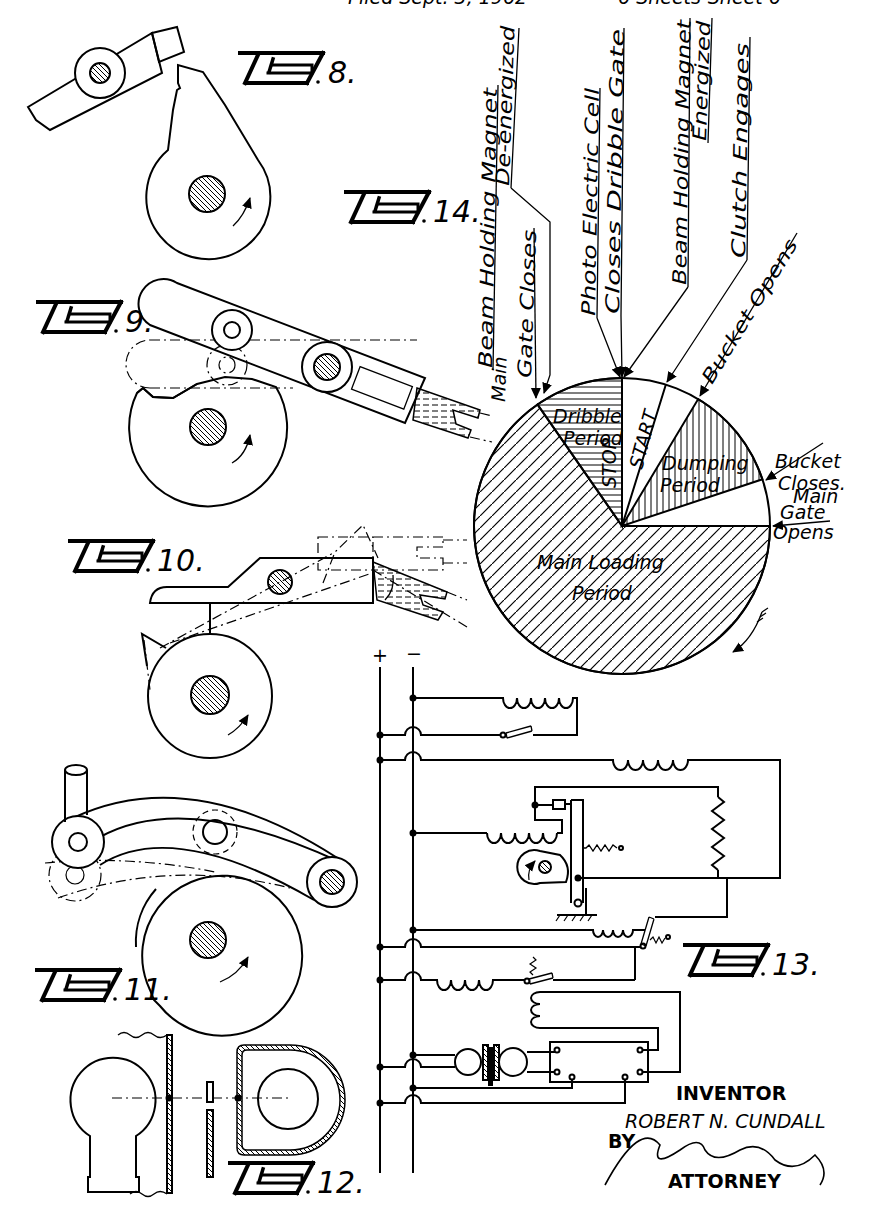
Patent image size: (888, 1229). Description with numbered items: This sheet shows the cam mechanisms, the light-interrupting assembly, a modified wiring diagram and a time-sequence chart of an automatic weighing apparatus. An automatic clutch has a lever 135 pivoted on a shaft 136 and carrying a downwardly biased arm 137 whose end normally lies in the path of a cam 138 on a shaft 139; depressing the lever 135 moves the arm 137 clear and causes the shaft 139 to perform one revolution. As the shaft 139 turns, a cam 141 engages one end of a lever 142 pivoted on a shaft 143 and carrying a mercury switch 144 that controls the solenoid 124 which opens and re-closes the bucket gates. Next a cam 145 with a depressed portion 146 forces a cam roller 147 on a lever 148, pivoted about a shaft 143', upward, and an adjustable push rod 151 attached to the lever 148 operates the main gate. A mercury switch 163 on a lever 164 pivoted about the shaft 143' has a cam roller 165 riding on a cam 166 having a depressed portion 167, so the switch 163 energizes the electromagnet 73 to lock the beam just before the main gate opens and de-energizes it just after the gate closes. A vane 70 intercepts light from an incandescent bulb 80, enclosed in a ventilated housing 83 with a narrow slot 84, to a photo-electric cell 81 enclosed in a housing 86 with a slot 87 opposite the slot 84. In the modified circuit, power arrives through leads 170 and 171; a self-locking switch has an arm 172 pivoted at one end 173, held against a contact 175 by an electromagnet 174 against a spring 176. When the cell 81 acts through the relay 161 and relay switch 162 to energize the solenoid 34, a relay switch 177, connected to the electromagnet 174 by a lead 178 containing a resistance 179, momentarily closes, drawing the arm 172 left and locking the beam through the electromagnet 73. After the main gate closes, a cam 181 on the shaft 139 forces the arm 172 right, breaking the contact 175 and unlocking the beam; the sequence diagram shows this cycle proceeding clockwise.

In FIG. 8, the lever 135 is at (67, 107).
In FIG. 8, the shaft 136 is at (104, 80).
In FIG. 8, the arm 137 is at (176, 40).
In FIG. 8, the cam 138 is at (217, 123).
In FIG. 8, the shaft 139 is at (216, 186).
In FIG. 9, the shaft 139 is at (207, 434).
In FIG. 10, the shaft 139 is at (205, 703).
In FIG. 11, the shaft 139 is at (209, 922).
In FIG. 13, the shaft 139 is at (549, 875).
In FIG. 9, the lever 164 is at (275, 332).
In FIG. 9, the cam roller 165 is at (236, 325).
In FIG. 9, the cam 166 is at (152, 462).
In FIG. 9, the depressed portion 167 is at (147, 390).
In FIG. 9, the shaft 143' is at (347, 352).
In FIG. 11, the shaft 143' is at (340, 865).
In FIG. 9, the mercury switch 163 is at (437, 392).
In FIG. 10, the cam 141 is at (170, 636).
In FIG. 10, the lever 142 is at (265, 558).
In FIG. 10, the shaft 143 is at (290, 605).
In FIG. 10, the mercury switch 144 is at (400, 598).
In FIG. 13, the mercury switch 144 is at (507, 728).
In FIG. 11, the cam 145 is at (148, 935).
In FIG. 11, the depressed portion 146 is at (143, 901).
In FIG. 11, the cam roller 147 is at (225, 817).
In FIG. 11, the lever 148 is at (270, 823).
In FIG. 11, the adjustable push rod 151 is at (80, 786).
In FIG. 12, the incandescent bulb 80 is at (86, 1074).
In FIG. 13, the incandescent bulb 80 is at (468, 1051).
In FIG. 12, the photo-electric cell 81 is at (291, 1078).
In FIG. 13, the photo-electric cell 81 is at (521, 1048).
In FIG. 12, the housing 83 is at (173, 1068).
In FIG. 13, the housing 83 is at (484, 1045).
In FIG. 12, the slot 84 is at (165, 1100).
In FIG. 12, the housing 86 is at (325, 1072).
In FIG. 12, the slot 87 is at (240, 1096).
In FIG. 13, the slot 87 is at (497, 1045).
In FIG. 12, the vane 70 is at (207, 1128).
In FIG. 13, the vane 70 is at (490, 1085).
In FIG. 13, the solenoid 124 is at (527, 690).
In FIG. 13, the electromagnet 73 is at (672, 756).
In FIG. 13, the lead 170 is at (380, 768).
In FIG. 13, the lead 171 is at (415, 792).
In FIG. 13, the switch arm 172 is at (585, 807).
In FIG. 13, the pivot end 173 is at (585, 900).
In FIG. 13, the electromagnet 174 is at (508, 830).
In FIG. 13, the contact 175 is at (557, 799).
In FIG. 13, the spring 176 is at (606, 848).
In FIG. 13, the relay switch 177 is at (650, 922).
In FIG. 13, the lead 178 is at (680, 788).
In FIG. 13, the resistance 179 is at (726, 812).
In FIG. 13, the cam 181 is at (536, 858).
In FIG. 13, the solenoid 34 is at (450, 980).
In FIG. 13, the relay switch 162 is at (546, 979).
In FIG. 13, the relay 161 is at (647, 1027).